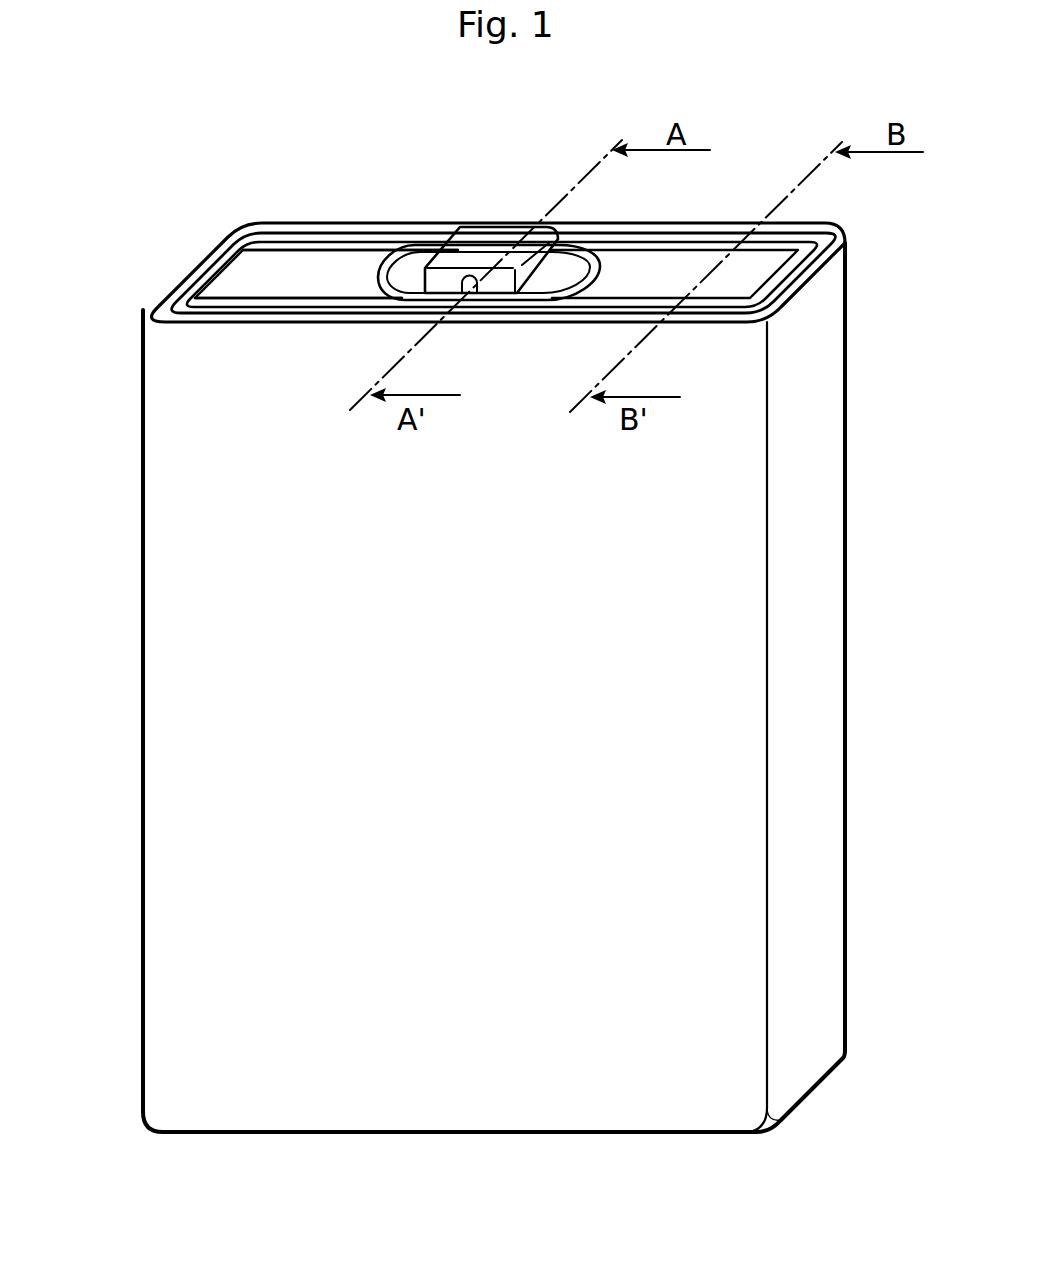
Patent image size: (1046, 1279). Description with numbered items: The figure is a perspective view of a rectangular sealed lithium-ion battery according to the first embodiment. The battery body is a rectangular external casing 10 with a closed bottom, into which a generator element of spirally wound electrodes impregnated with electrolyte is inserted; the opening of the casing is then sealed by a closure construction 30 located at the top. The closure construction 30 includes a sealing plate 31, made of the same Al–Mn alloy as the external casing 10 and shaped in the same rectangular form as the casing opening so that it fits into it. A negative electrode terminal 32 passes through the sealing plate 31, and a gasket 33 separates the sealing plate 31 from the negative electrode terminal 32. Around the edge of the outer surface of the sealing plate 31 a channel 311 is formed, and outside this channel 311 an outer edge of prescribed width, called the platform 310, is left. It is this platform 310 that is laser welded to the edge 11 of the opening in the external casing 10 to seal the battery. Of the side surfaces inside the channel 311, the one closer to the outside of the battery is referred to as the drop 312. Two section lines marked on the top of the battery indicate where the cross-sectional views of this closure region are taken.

The external casing 10 is at (172, 725).
The edge of the opening 11 is at (820, 267).
The closure construction 30 is at (301, 277).
The sealing plate 31 is at (353, 274).
The negative electrode terminal 32 is at (483, 245).
The gasket 33 is at (580, 245).
The platform 310 is at (790, 237).
The channel 311 is at (255, 245).
The drop 312 is at (278, 243).